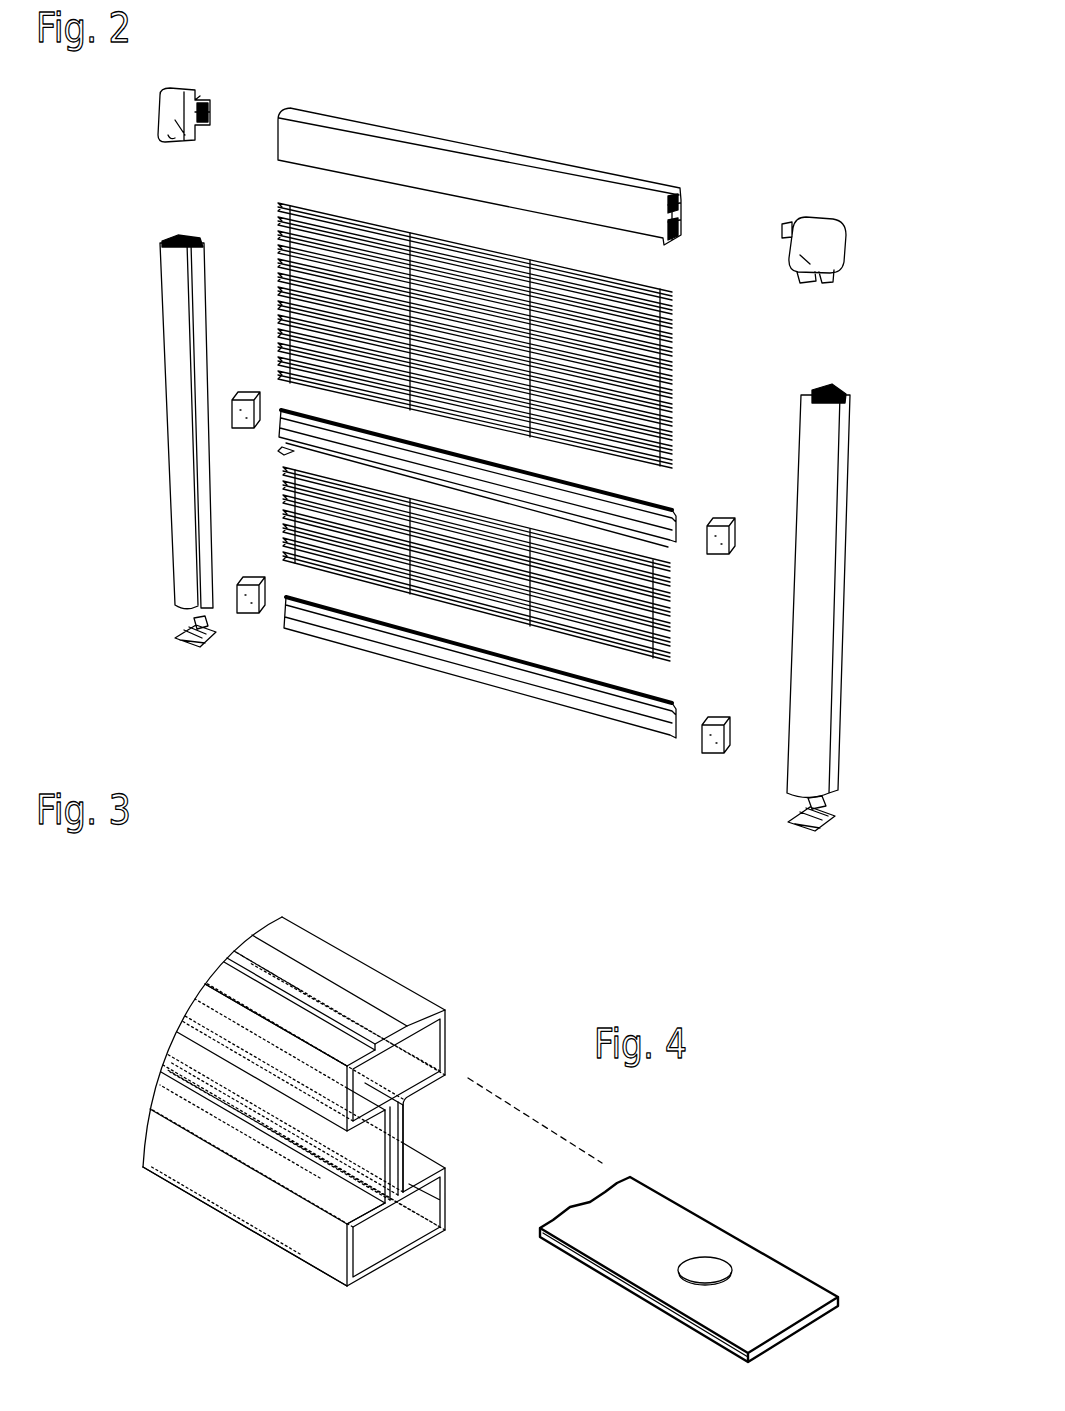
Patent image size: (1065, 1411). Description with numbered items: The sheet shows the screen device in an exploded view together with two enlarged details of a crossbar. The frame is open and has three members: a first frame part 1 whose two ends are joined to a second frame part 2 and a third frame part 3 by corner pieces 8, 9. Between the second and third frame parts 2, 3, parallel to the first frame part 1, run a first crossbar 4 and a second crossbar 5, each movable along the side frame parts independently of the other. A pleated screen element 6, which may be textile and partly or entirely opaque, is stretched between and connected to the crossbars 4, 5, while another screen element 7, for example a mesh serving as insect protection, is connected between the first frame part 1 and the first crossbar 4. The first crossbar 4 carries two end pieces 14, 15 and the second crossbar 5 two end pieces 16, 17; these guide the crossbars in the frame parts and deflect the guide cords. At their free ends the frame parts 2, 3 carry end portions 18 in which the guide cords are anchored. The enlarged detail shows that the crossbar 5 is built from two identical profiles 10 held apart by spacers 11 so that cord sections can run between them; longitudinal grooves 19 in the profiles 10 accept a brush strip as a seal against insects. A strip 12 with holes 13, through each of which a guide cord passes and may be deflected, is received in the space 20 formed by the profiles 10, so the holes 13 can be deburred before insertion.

In FIG. 2, the first frame part 1 is at (522, 180).
In FIG. 2, the second frame part 2 is at (168, 262).
In FIG. 2, the third frame part 3 is at (820, 427).
In FIG. 2, the first crossbar 4 is at (674, 511).
In FIG. 2, the second crossbar 5 is at (675, 703).
In FIG. 3, the second crossbar 5 is at (353, 899).
In FIG. 2, the pleated screen element 6 is at (288, 487).
In FIG. 2, the screen element 7 is at (675, 367).
In FIG. 2, the corner piece 8 is at (167, 110).
In FIG. 2, the corner piece 9 is at (820, 233).
In FIG. 3, the profile 10 is at (413, 997).
In FIG. 3, the spacer 11 is at (230, 1026).
In FIG. 2, the strip 12 is at (280, 450).
In FIG. 4, the strip 12 is at (785, 1297).
In FIG. 4, the hole 13 is at (694, 1268).
In FIG. 2, the end piece 14 is at (232, 410).
In FIG. 2, the end piece 15 is at (735, 537).
In FIG. 2, the end piece 16 is at (237, 593).
In FIG. 2, the end piece 17 is at (730, 734).
In FIG. 2, the end portion 18 is at (173, 630).
In FIG. 3, the longitudinal groove 19 is at (343, 1226).
In FIG. 3, the space 20 is at (432, 1052).